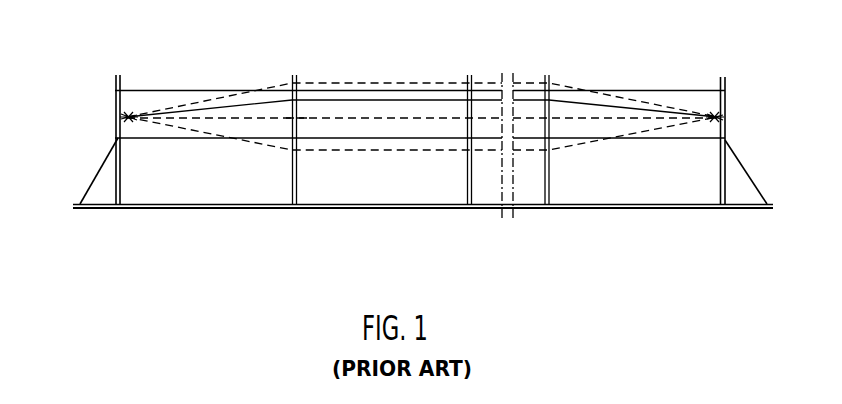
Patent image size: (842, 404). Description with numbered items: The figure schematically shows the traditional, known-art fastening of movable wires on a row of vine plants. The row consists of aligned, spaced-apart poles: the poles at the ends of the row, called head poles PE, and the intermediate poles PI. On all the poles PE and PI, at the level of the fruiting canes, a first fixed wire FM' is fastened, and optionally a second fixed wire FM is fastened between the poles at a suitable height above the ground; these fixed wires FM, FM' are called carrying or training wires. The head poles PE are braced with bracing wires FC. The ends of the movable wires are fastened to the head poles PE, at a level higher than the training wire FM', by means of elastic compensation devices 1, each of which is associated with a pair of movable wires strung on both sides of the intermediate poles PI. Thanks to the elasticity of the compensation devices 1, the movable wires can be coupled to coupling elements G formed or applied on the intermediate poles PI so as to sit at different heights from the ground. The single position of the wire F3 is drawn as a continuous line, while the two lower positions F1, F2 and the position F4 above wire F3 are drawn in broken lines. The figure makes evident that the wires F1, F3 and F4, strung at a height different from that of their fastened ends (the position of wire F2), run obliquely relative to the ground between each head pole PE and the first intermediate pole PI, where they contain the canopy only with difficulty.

The elastic compensation device 1 is at (134, 106).
The second fixed wire FM is at (420, 59).
The first fixed wire FM' is at (420, 85).
The movable wire (lower position) F1 is at (342, 152).
The movable wire (end-fastening position) F2 is at (389, 115).
The movable wire (continuous-line position) F3 is at (437, 99).
The movable wire (upper position) F4 is at (342, 82).
The coupling element G is at (298, 118).
The head pole PE is at (125, 177).
The intermediate pole PI is at (291, 157).
The bracing wire FC is at (97, 172).